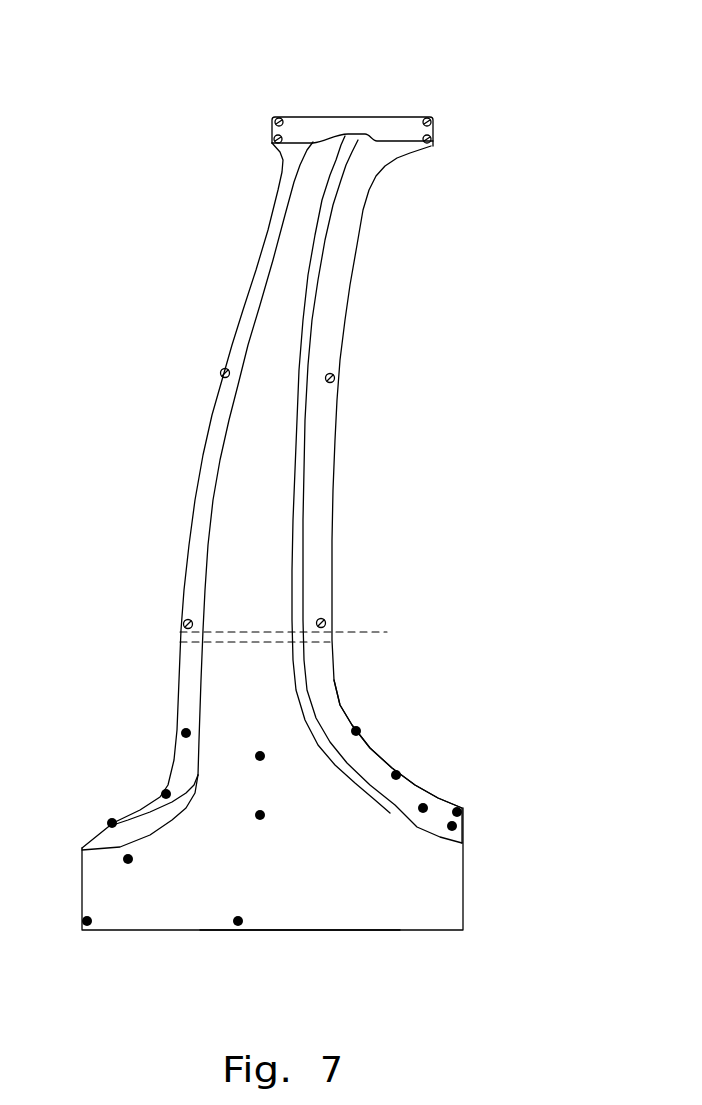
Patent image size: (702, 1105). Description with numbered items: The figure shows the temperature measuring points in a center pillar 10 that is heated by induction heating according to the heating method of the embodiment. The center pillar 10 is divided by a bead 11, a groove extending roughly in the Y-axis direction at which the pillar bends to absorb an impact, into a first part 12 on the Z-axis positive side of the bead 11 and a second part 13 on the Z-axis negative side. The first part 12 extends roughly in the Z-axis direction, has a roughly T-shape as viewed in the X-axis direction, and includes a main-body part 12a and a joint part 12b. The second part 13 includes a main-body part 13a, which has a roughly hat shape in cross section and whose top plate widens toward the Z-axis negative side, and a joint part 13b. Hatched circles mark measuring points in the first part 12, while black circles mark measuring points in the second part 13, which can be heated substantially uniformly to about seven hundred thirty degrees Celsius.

The center pillar 10 is at (543, 82).
The bead 11 is at (304, 630).
The first part 12 is at (356, 462).
The main-body part 12a is at (280, 297).
The joint part 12b is at (388, 122).
The second part 13 is at (481, 890).
The main-body part 13a is at (372, 760).
The joint part 13b is at (392, 920).